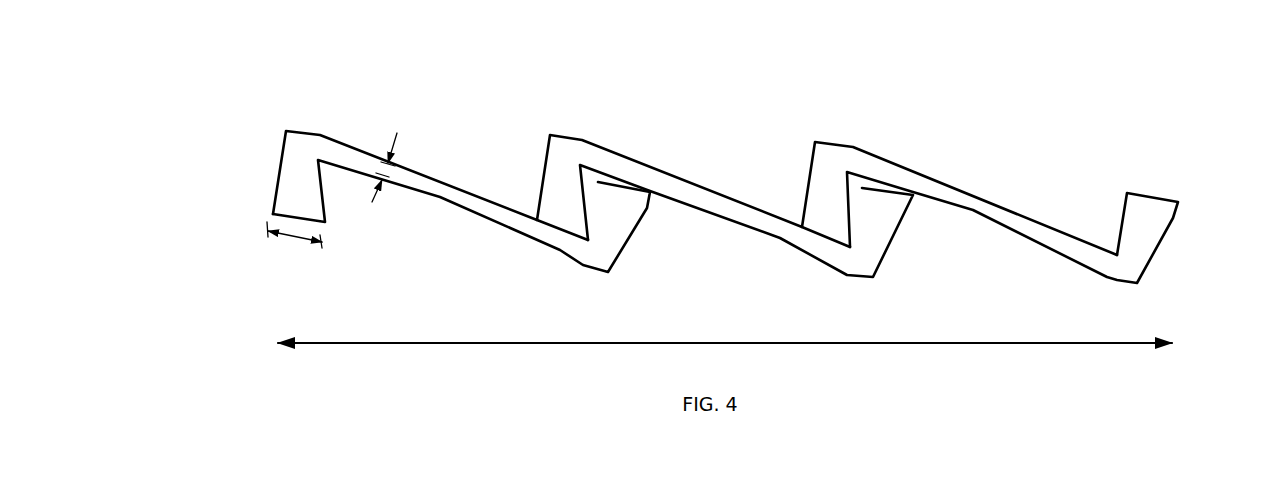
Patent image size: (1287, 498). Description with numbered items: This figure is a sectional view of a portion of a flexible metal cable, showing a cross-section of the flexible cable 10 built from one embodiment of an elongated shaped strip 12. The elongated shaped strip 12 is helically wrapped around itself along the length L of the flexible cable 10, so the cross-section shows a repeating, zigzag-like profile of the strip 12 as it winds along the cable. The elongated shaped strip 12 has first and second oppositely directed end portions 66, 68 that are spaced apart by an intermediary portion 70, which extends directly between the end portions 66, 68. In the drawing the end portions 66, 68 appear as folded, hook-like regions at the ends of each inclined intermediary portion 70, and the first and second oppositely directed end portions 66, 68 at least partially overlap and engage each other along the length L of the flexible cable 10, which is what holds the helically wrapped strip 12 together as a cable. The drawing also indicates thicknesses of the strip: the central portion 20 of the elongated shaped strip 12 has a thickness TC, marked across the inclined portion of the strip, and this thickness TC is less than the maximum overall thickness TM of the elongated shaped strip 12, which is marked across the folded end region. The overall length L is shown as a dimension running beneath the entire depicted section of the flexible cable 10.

The flexible cable 10 is at (232, 103).
The elongated shaped strip 12 is at (340, 140).
The central portion 20 is at (445, 243).
The first end portion 66 is at (1200, 250).
The second end portion 68 is at (530, 147).
The intermediary portion 70 is at (695, 162).
The thickness of the central portion TC is at (398, 148).
The maximum overall thickness TM is at (293, 236).
The length of the flexible cable L is at (889, 343).